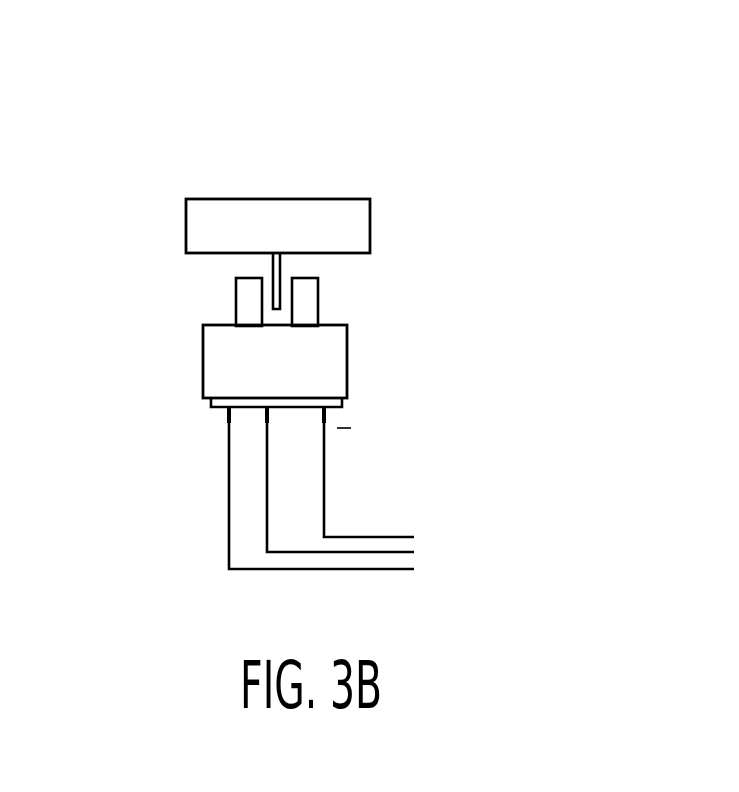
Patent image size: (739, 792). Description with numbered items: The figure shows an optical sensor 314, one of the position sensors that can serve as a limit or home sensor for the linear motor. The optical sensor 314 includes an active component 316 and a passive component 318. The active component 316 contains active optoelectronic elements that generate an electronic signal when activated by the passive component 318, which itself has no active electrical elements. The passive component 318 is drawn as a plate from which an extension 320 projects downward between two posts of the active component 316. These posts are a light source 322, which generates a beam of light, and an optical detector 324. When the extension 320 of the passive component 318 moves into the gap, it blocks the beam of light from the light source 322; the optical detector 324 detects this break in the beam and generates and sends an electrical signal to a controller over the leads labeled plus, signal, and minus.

The optical sensor 314 is at (452, 178).
The active component 316 is at (212, 369).
The passive component 318 is at (194, 225).
The extension 320 is at (277, 270).
The light source 322 is at (242, 303).
The optical detector 324 is at (308, 303).